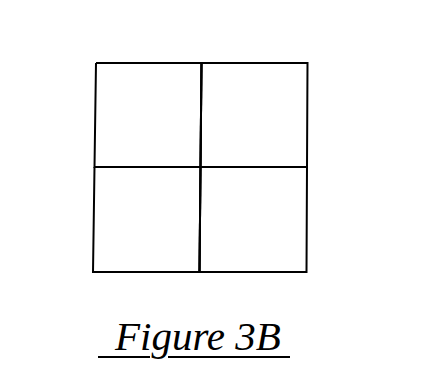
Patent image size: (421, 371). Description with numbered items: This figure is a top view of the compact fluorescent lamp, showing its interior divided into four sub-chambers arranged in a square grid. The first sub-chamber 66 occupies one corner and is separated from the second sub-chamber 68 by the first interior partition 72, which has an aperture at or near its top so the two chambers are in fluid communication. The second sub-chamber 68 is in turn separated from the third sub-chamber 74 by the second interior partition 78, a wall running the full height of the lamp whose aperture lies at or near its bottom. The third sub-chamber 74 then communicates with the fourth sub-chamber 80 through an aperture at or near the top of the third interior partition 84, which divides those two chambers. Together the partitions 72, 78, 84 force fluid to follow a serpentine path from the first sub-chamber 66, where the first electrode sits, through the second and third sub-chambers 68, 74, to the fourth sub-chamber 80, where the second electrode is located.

The first sub-chamber 66 is at (110, 232).
The second sub-chamber 68 is at (112, 110).
The first interior partition 72 is at (112, 167).
The third sub-chamber 74 is at (272, 103).
The second interior partition 78 is at (199, 85).
The fourth sub-chamber 80 is at (287, 227).
The third interior partition 84 is at (285, 167).